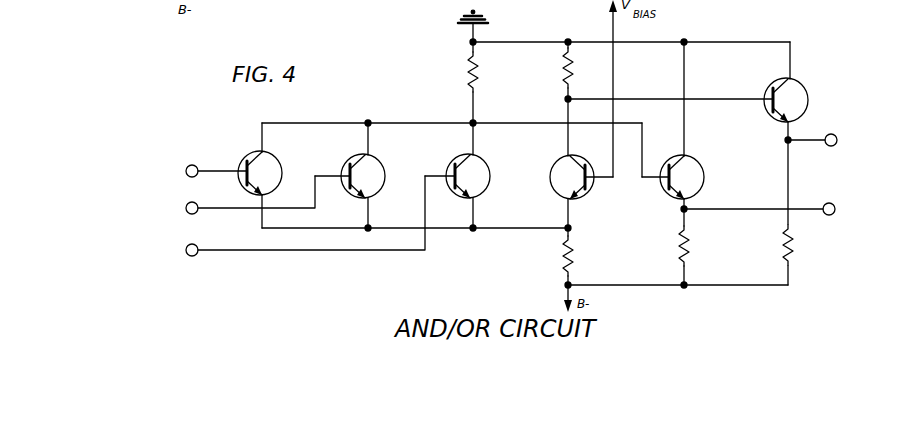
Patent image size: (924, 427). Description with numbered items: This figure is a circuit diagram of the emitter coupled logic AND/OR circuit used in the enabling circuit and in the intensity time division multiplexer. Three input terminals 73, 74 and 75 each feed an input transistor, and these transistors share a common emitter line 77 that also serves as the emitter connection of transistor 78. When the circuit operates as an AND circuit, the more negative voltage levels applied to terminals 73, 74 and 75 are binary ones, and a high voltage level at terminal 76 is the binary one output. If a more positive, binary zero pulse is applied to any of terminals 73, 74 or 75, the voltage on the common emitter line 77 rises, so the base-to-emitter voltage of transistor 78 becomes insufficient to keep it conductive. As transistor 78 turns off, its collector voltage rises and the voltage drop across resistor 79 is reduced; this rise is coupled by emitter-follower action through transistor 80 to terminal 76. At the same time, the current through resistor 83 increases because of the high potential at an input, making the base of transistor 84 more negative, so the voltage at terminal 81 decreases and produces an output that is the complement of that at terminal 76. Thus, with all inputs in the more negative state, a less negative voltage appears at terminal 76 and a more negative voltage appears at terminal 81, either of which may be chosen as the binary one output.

The input terminal 73 is at (186, 168).
The input terminal 74 is at (186, 207).
The input terminal 75 is at (186, 249).
The output terminal 76 is at (840, 133).
The common emitter line 77 is at (517, 232).
The transistor 78 is at (584, 198).
The resistor 79 is at (563, 74).
The transistor 80 is at (803, 88).
The output terminal 81 is at (836, 211).
The resistor 83 is at (467, 74).
The transistor 84 is at (702, 168).